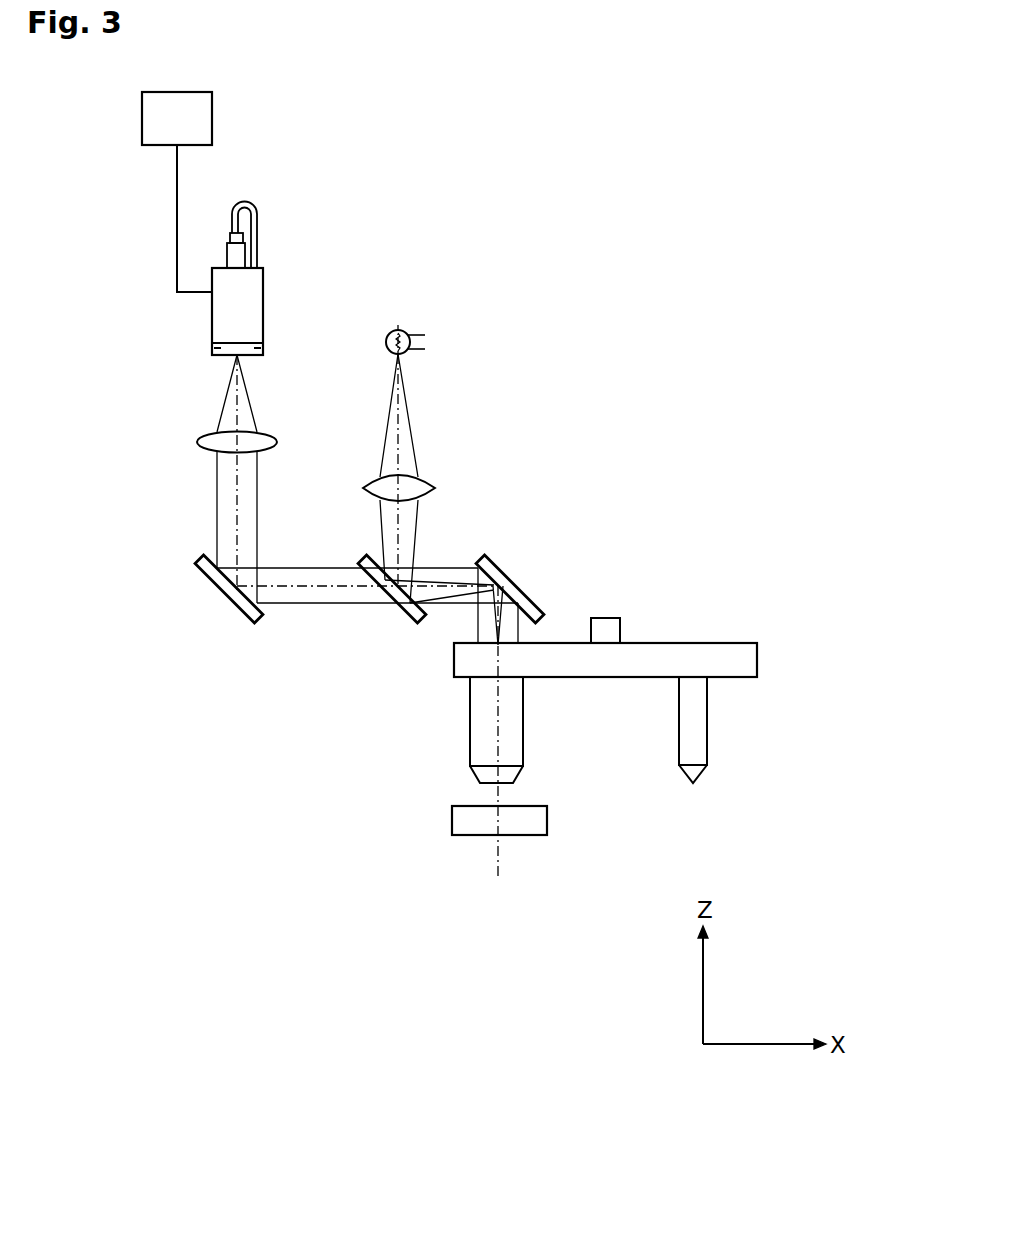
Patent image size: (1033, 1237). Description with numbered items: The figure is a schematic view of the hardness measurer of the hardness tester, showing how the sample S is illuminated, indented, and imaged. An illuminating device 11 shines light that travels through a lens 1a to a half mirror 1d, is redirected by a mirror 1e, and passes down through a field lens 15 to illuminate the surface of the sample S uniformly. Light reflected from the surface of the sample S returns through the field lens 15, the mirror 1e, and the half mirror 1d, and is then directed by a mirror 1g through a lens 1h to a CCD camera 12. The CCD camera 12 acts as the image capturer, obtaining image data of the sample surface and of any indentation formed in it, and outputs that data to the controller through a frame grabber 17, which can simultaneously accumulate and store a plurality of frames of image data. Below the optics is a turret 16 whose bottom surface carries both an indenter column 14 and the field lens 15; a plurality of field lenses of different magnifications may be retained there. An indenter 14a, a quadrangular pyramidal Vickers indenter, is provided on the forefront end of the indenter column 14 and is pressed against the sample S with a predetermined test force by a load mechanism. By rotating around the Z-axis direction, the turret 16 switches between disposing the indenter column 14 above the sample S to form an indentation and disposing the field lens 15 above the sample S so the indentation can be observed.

The frame grabber 17 is at (212, 120).
The CCD camera 12 is at (263, 287).
The illuminating device 11 is at (415, 333).
The lens 1h is at (205, 435).
The lens 1a is at (366, 484).
The mirror 1g is at (200, 562).
The half mirror 1d is at (417, 612).
The mirror 1e is at (498, 565).
The turret 16 is at (702, 642).
The field lens 15 is at (523, 725).
The indenter column 14 is at (707, 725).
The indenter 14a is at (705, 775).
The sample S is at (548, 820).